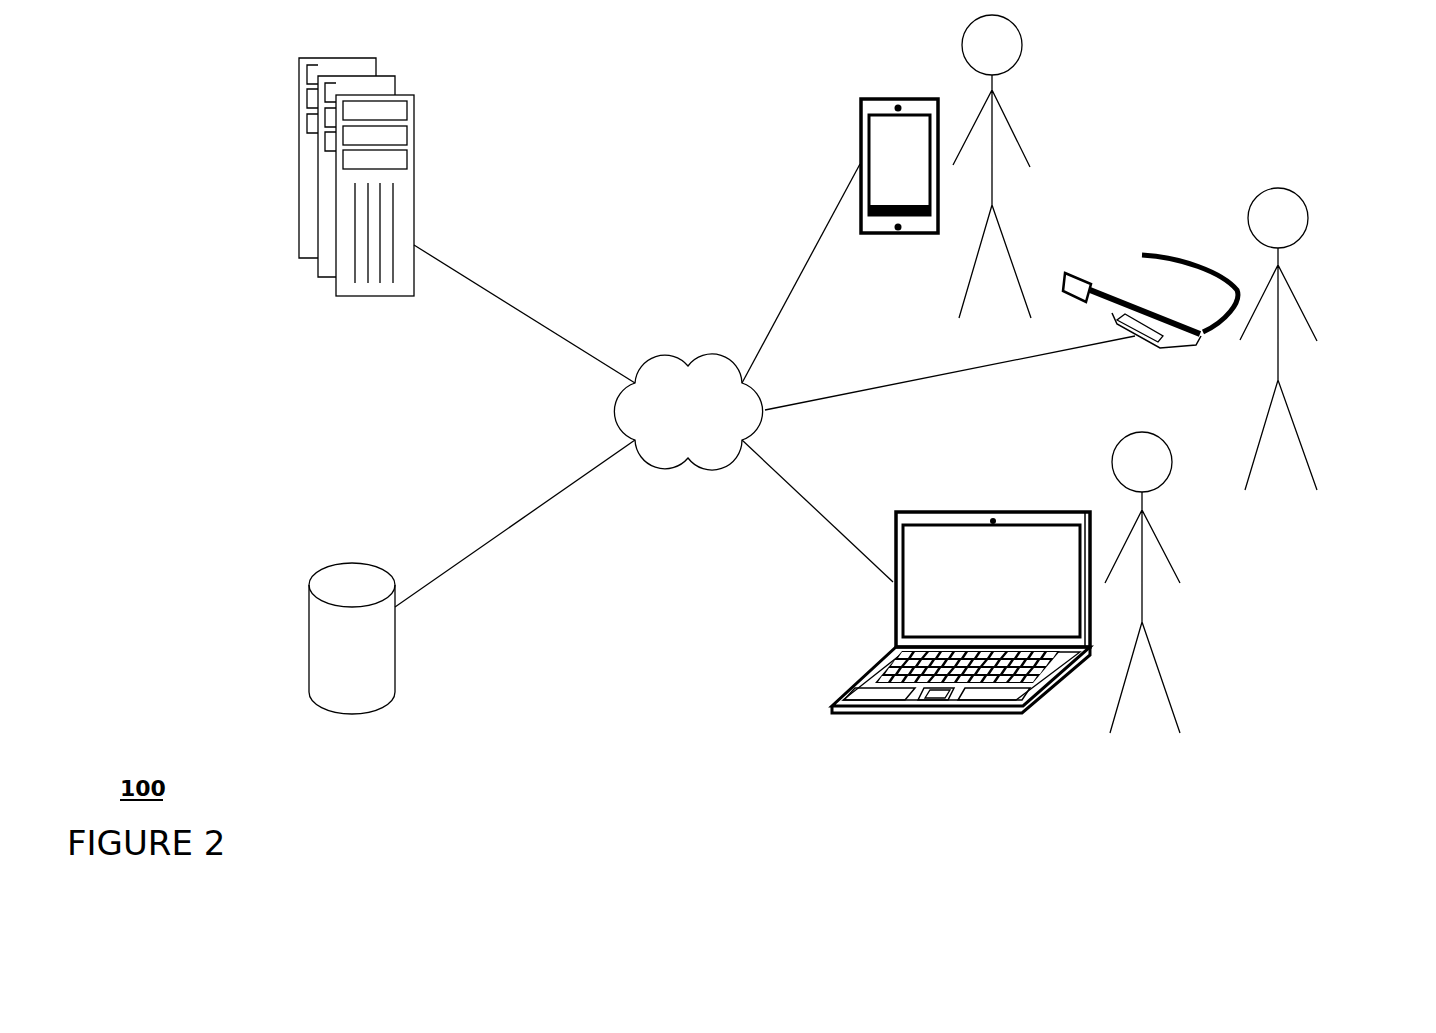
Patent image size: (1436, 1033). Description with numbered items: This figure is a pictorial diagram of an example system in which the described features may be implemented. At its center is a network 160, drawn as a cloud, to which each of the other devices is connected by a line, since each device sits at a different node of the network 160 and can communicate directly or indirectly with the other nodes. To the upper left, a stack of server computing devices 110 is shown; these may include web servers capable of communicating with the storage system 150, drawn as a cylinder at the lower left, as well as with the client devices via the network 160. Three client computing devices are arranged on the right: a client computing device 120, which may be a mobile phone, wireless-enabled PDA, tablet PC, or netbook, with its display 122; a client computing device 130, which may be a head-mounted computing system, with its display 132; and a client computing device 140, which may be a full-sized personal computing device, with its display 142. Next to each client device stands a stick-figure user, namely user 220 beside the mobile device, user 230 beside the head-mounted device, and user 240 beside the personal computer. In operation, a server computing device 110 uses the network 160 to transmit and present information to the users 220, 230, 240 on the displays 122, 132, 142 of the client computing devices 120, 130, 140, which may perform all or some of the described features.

The computing device 110 is at (414, 137).
The client computing device 120 is at (858, 133).
The display 122 is at (860, 162).
The client computing device 130 is at (1173, 252).
The display 132 is at (1193, 346).
The client computing device 140 is at (896, 585).
The display 142 is at (896, 625).
The storage system 150 is at (395, 658).
The network 160 is at (688, 412).
The user 220 is at (1027, 155).
The user 230 is at (1313, 330).
The user 240 is at (1175, 570).